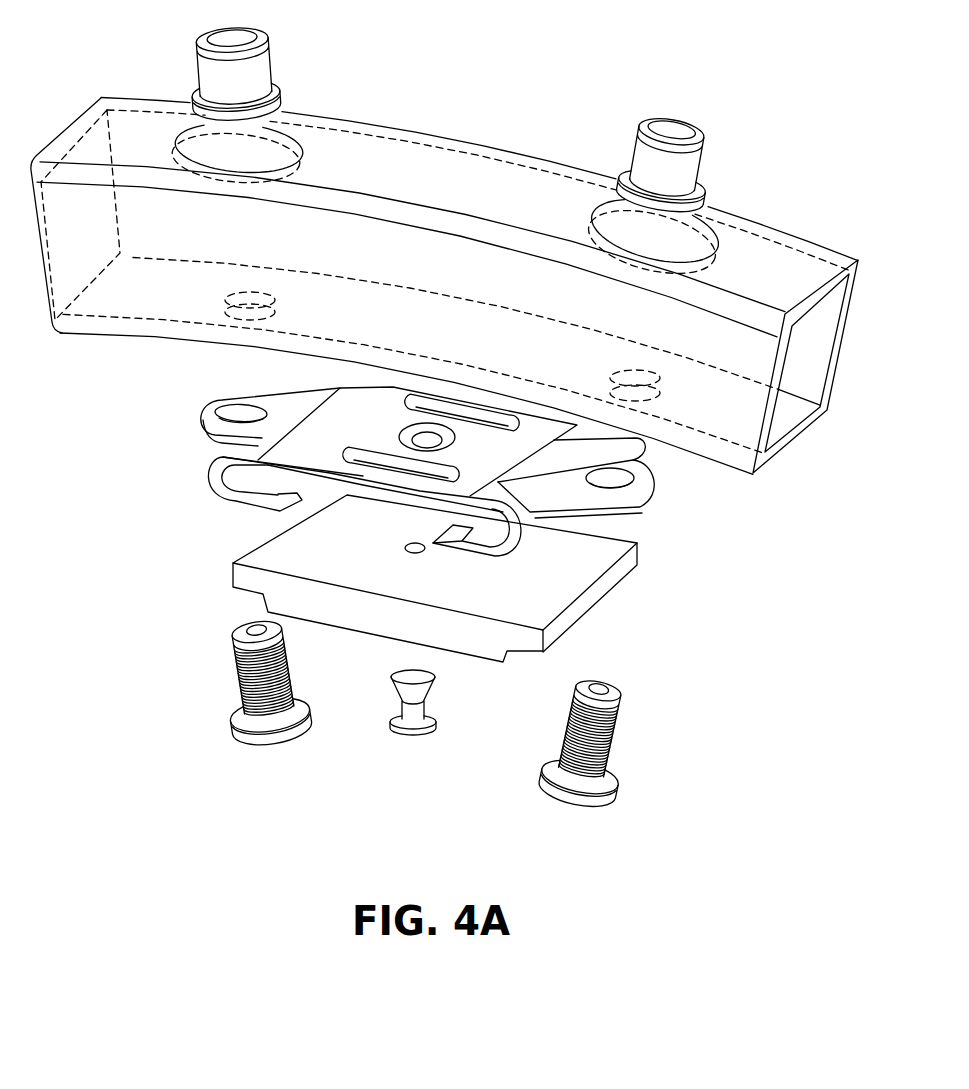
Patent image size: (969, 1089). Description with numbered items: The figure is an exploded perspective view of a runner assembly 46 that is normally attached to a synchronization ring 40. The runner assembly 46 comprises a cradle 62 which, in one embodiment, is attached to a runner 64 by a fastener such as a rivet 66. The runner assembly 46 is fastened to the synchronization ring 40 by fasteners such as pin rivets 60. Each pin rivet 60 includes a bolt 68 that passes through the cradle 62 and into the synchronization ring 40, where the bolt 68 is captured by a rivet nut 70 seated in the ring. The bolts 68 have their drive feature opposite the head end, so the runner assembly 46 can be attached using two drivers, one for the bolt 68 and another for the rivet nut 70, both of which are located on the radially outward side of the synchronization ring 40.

The synchronization ring 40 is at (740, 250).
The rivet nut 70 is at (270, 63).
The runner assembly 46 is at (694, 617).
The cradle 62 is at (640, 503).
The runner 64 is at (625, 572).
The rivet 66 is at (408, 737).
The pin rivet 60 is at (425, 715).
The bolt 68 is at (238, 688).